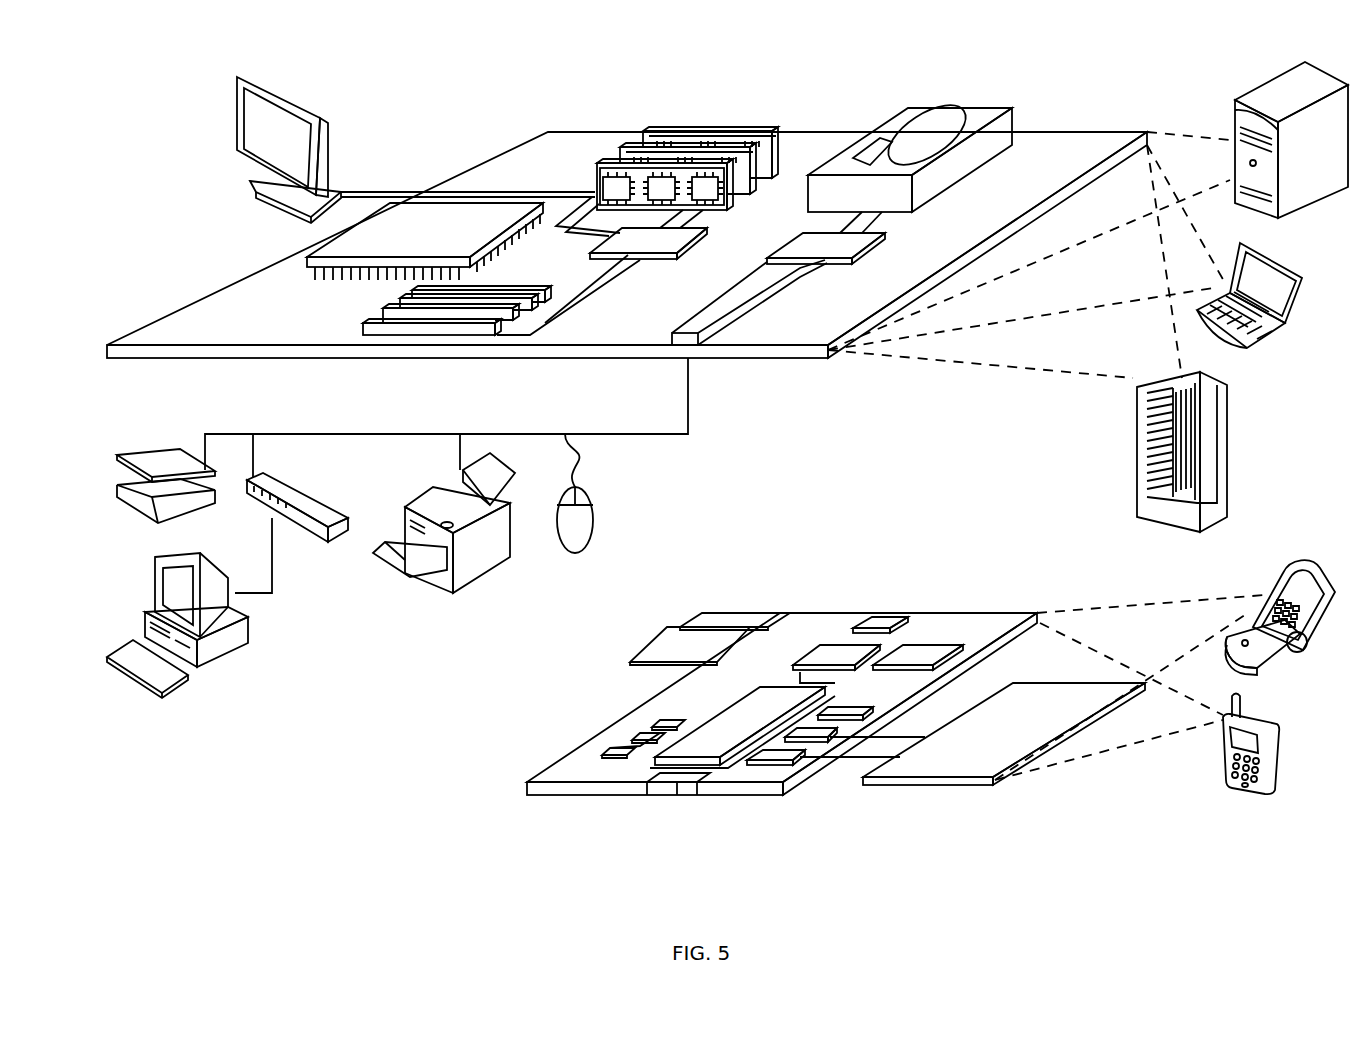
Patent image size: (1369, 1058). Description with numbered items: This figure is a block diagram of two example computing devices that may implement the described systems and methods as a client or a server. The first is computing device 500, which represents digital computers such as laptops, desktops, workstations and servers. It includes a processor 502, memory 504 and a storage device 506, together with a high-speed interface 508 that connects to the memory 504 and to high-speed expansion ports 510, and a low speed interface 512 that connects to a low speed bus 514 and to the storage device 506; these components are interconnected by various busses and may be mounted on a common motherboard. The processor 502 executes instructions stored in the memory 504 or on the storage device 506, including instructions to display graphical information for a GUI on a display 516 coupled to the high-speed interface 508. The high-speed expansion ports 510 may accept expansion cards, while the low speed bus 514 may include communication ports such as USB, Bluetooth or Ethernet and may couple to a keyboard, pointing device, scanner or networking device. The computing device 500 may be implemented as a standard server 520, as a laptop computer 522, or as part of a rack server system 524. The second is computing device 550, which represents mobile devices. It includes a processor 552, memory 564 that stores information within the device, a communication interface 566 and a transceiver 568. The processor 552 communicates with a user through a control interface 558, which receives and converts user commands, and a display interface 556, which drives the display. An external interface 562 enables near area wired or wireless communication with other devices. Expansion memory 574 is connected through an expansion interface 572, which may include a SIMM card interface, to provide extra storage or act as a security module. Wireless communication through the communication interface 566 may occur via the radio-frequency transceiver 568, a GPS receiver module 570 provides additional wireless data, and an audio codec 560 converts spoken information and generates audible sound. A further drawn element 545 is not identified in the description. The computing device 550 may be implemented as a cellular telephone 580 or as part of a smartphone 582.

The computing device 500 is at (443, 102).
The processor 502 is at (307, 258).
The memory 504 is at (650, 127).
The storage device 506 is at (893, 110).
The high-speed interface 508 is at (627, 240).
The high-speed expansion ports 510 is at (377, 316).
The low speed interface 512 is at (807, 243).
The low speed bus 514 is at (700, 348).
The display 516 is at (247, 77).
The standard server 520 is at (1233, 118).
The laptop computer 522 is at (1303, 270).
The rack server system 524 is at (1137, 478).
The communication interface 545 is at (960, 768).
The computing device 550 is at (500, 795).
The processor 552 is at (712, 748).
The display interface 556 is at (782, 757).
The control interface 558 is at (825, 730).
The audio codec 560 is at (847, 710).
The external interface 562 is at (677, 783).
The memory 564 is at (610, 740).
The communication interface 566 is at (835, 653).
The transceiver 568 is at (920, 653).
The GPS receiver module 570 is at (888, 618).
The expansion interface 572 is at (763, 627).
The expansion memory 574 is at (675, 627).
The cellular telephone 580 is at (1283, 573).
The smartphone 582 is at (1222, 753).